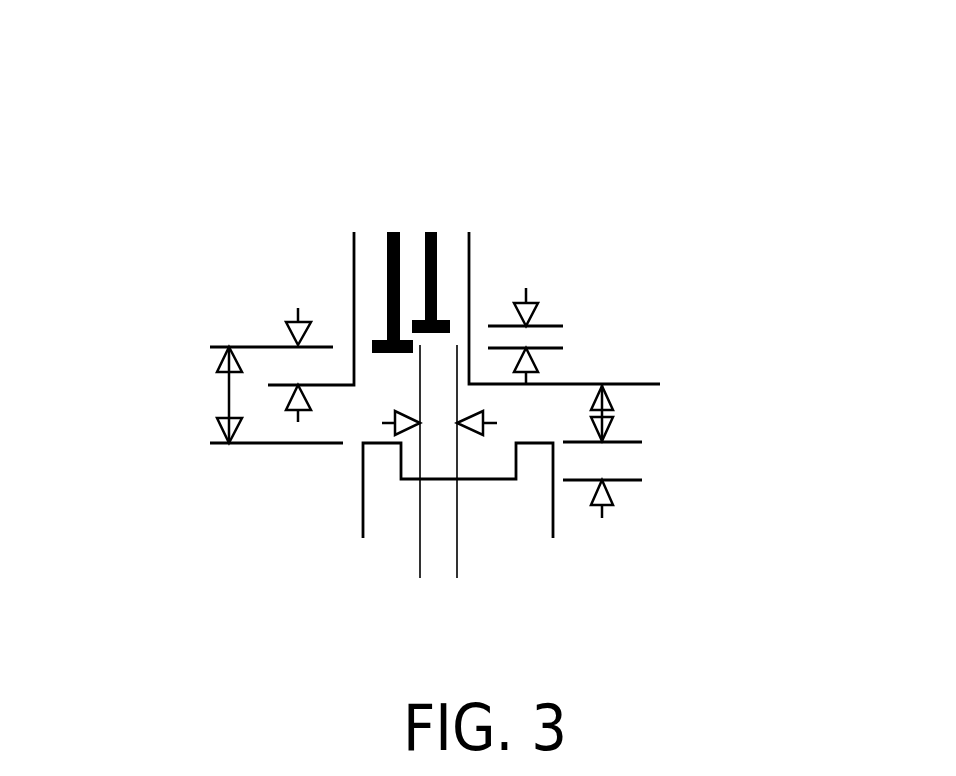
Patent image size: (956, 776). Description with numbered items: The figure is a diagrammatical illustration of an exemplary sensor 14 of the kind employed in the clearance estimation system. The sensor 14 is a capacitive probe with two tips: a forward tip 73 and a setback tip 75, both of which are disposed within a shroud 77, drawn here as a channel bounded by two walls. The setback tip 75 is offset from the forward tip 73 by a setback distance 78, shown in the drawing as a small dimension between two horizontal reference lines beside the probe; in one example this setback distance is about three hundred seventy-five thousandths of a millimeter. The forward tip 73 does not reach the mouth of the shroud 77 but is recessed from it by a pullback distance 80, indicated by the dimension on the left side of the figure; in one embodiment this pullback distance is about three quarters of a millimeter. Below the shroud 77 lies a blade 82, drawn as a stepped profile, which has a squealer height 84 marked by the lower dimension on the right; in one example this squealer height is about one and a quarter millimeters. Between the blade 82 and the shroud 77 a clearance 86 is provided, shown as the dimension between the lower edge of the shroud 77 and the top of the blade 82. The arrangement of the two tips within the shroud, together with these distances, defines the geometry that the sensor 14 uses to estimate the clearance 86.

The sensor 14 is at (723, 88).
The forward tip 73 is at (372, 253).
The setback tip 75 is at (452, 278).
The shroud 77 is at (470, 241).
The setback distance 78 is at (595, 332).
The pullback distance 80 is at (265, 348).
The blade 82 is at (590, 553).
The squealer height 84 is at (670, 466).
The clearance 86 is at (648, 413).